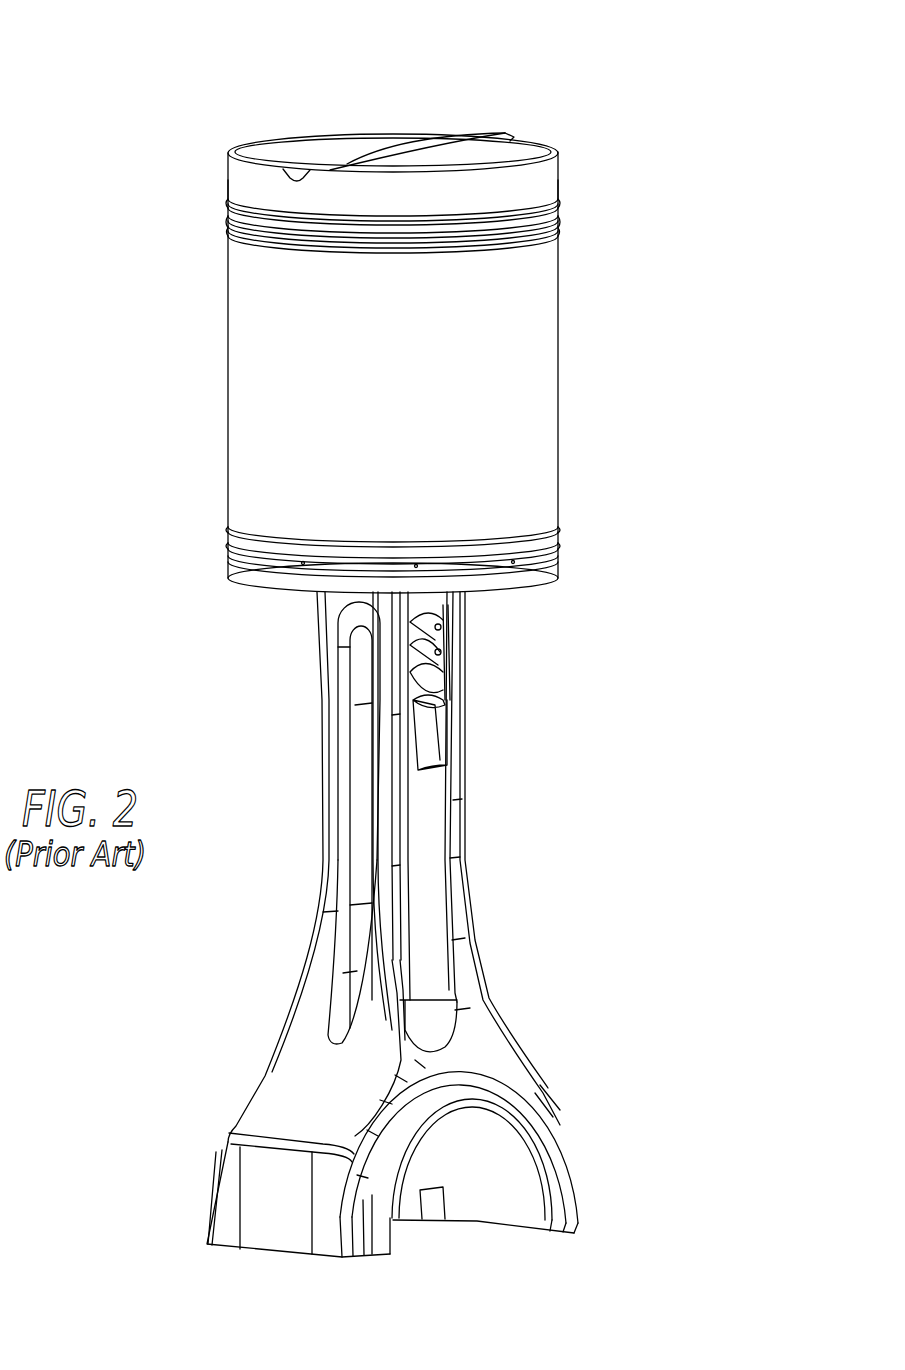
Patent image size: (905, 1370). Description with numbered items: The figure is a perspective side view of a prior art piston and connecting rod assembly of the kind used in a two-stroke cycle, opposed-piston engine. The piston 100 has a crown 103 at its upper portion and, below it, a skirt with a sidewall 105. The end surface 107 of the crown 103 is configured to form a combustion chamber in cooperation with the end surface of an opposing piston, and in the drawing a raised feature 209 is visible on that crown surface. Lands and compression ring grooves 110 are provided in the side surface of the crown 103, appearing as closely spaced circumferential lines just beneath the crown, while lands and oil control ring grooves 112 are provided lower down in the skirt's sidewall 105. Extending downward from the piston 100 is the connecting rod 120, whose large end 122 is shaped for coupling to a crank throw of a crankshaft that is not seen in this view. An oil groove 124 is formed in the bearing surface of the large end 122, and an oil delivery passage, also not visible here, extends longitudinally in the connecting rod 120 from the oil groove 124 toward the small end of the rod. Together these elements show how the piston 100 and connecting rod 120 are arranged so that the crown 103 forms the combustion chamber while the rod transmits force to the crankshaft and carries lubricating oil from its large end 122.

The piston 100 is at (614, 350).
The crown 103 is at (545, 181).
The sidewall 105 is at (559, 418).
The end surface 107 is at (304, 126).
The lands and compression ring grooves 110 is at (229, 197).
The lands and oil control ring grooves 112 is at (229, 520).
The connecting rod 120 is at (495, 865).
The large end 122 is at (566, 1163).
The oil groove 124 is at (463, 1152).
The valve pocket dome 209 is at (511, 139).